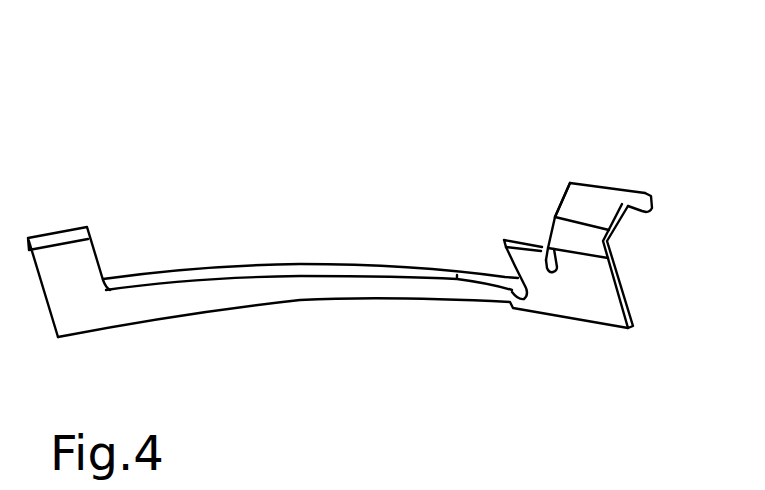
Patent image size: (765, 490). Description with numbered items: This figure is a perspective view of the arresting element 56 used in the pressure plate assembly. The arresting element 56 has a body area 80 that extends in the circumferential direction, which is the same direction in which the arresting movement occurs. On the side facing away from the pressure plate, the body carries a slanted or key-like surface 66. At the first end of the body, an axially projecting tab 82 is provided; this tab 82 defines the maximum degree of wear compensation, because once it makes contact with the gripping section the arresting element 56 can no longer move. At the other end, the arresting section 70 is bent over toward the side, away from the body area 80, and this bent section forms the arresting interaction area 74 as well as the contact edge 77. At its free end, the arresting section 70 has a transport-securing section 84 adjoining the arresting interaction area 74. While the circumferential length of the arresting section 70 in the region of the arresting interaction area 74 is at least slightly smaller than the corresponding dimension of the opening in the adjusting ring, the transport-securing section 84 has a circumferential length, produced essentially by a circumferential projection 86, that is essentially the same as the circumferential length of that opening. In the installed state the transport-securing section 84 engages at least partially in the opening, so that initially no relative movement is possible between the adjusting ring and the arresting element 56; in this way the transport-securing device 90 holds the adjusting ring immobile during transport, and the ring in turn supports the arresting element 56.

The arresting element 56 is at (328, 291).
The slanted or key-like surface 66 is at (315, 268).
The arresting section 70 is at (597, 172).
The arresting interaction area 74 is at (562, 197).
The contact edge 77 is at (560, 212).
The body area 80 is at (311, 287).
The axially projecting tab 82 is at (53, 250).
The transport-securing section 84 is at (607, 189).
The circumferential projection 86 is at (650, 196).
The transport-securing device 90 is at (606, 172).